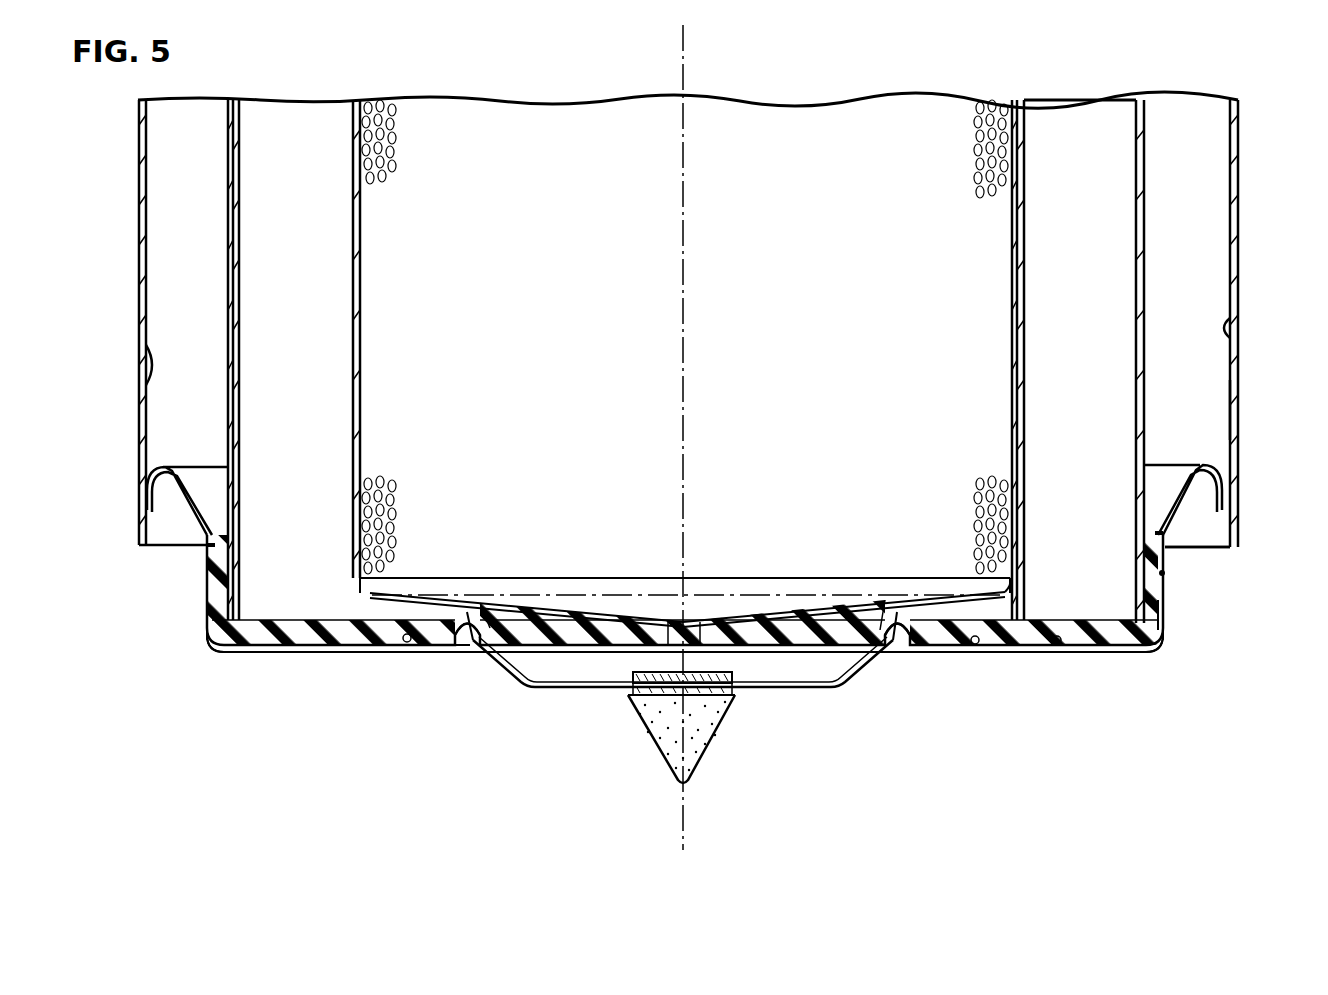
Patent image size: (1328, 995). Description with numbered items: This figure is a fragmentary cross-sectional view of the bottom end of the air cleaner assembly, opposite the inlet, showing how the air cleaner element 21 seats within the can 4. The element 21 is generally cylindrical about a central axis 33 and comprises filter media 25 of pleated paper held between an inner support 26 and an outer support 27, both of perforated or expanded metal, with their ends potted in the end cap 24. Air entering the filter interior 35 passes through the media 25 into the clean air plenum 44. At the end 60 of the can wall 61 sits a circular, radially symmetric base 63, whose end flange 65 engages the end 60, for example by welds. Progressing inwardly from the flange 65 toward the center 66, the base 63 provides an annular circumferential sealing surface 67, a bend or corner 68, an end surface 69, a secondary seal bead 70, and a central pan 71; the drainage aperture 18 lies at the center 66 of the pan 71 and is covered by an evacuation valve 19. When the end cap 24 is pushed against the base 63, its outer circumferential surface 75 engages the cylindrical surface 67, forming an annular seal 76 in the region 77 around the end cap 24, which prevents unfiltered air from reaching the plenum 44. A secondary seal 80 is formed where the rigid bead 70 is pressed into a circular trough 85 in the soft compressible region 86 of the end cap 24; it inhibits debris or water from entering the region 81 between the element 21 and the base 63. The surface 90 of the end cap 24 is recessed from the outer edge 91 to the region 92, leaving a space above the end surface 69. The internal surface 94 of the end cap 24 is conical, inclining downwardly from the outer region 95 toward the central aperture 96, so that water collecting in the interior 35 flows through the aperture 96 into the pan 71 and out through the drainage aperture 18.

The can 4 is at (1238, 245).
The drainage aperture 18 is at (641, 700).
The evacuation valve 19 is at (700, 737).
The air cleaner element 21 is at (224, 229).
The second end cap 24 is at (277, 628).
The filter media 25 is at (1110, 118).
The inner support 26 is at (1012, 300).
The outer support 27 is at (1144, 212).
The central axis 33 is at (683, 786).
The filter interior 35 is at (360, 342).
The clean air plenum 44 is at (142, 365).
The end of can wall 60 is at (1236, 547).
The can wall 61 is at (1238, 411).
The base 63 is at (1165, 592).
The end flange 65 is at (165, 520).
The center 66 is at (700, 672).
The annular circumferential sealing surface 67 is at (1164, 622).
The bend or corner 68 is at (1165, 652).
The end surface 69 is at (1055, 652).
The secondary seal bead 70 is at (905, 640).
The central pan 71 is at (783, 690).
The outer circumferential surface 75 is at (212, 549).
The annular seal 76 is at (205, 636).
The region 77 is at (196, 598).
The secondary seal 80 is at (470, 608).
The region 81 is at (405, 648).
The circular recess or trough 85 is at (490, 628).
The region of end cap 86 is at (455, 625).
The surface of end cap 90 is at (320, 652).
The outer edge 91 is at (208, 648).
The region 92 is at (442, 648).
The internal surface 94 is at (765, 612).
The outer region 95 is at (985, 560).
The central aperture 96 is at (690, 630).